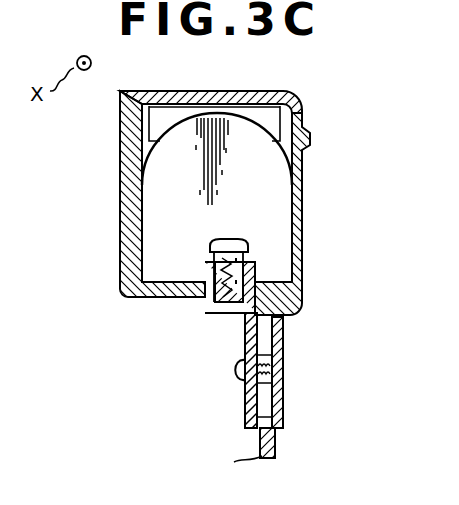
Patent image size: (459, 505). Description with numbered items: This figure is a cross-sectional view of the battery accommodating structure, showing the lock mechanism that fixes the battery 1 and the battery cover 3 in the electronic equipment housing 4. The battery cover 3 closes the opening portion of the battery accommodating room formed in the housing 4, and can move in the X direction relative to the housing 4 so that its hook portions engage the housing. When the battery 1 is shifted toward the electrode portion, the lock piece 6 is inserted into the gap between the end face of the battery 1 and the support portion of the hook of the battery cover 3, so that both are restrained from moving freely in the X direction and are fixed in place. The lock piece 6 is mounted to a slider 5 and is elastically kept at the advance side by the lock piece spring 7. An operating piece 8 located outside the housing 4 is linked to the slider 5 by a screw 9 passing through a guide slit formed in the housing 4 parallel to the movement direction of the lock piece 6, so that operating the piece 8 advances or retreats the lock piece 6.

The battery 1 is at (162, 181).
The battery cover 3 is at (283, 89).
The electronic equipment housing 4 is at (125, 91).
The slider 5 is at (246, 428).
The lock piece 6 is at (233, 240).
The lock piece spring 7 is at (212, 276).
The operating piece 8 is at (288, 414).
The screw 9 is at (240, 366).